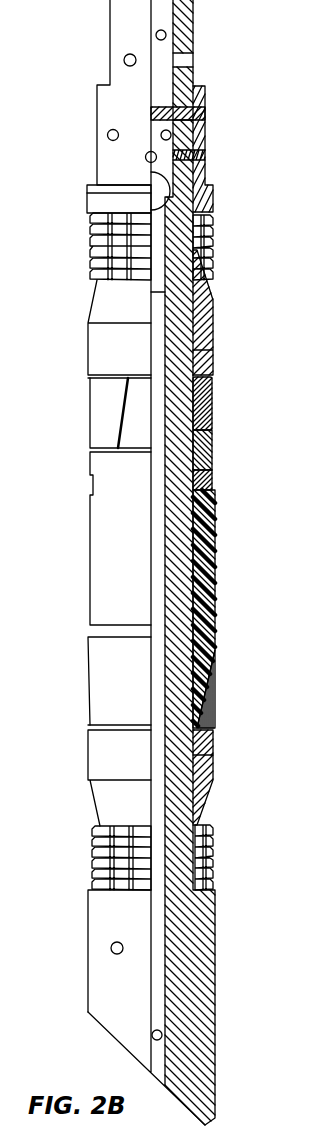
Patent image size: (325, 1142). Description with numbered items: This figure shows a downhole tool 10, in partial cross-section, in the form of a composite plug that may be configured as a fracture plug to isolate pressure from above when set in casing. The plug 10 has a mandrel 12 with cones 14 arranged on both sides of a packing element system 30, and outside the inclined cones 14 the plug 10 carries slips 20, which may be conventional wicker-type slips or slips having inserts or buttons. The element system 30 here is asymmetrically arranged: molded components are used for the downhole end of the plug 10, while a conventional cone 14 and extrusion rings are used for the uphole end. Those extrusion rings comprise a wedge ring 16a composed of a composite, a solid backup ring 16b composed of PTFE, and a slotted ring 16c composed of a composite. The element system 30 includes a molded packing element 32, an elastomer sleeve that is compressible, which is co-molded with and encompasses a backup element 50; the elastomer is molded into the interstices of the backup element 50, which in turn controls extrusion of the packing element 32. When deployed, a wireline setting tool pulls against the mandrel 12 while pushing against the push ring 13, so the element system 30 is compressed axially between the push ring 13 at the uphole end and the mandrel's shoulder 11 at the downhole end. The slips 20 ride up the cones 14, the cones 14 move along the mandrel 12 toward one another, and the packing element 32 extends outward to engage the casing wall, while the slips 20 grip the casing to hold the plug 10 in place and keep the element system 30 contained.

The downhole tool 10 is at (36, 66).
The mandrel's shoulder 11 is at (90, 884).
The mandrel 12 is at (110, 70).
The push ring 13 is at (87, 205).
The cone 14 is at (88, 350).
The wedge ring 16a is at (212, 484).
The solid backup ring 16b is at (213, 458).
The slotted ring 16c is at (213, 400).
The slips 20 is at (90, 258).
The packing element system 30 is at (88, 588).
The molded packing element 32 is at (215, 540).
The backup element 50 is at (215, 702).